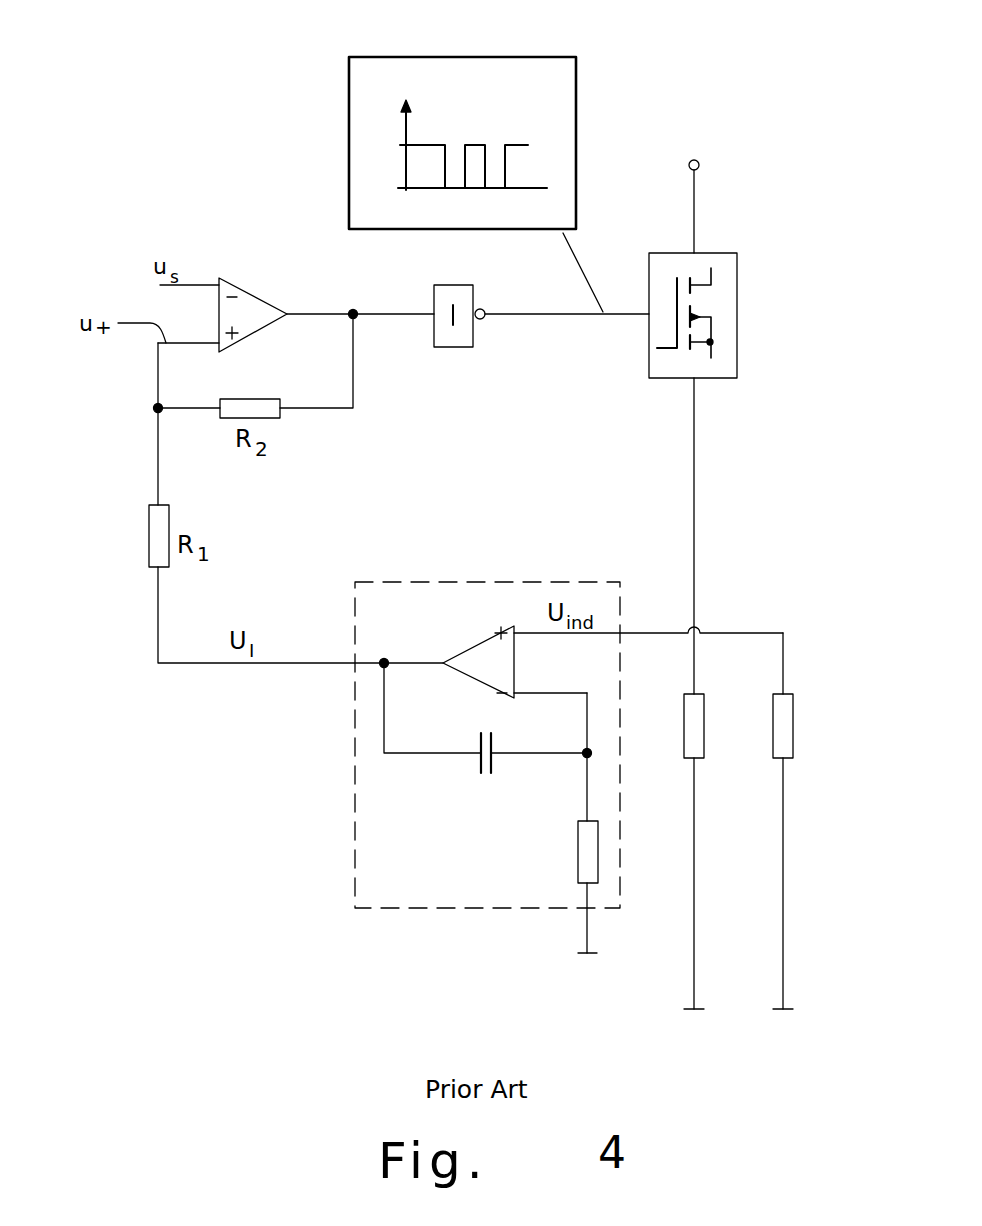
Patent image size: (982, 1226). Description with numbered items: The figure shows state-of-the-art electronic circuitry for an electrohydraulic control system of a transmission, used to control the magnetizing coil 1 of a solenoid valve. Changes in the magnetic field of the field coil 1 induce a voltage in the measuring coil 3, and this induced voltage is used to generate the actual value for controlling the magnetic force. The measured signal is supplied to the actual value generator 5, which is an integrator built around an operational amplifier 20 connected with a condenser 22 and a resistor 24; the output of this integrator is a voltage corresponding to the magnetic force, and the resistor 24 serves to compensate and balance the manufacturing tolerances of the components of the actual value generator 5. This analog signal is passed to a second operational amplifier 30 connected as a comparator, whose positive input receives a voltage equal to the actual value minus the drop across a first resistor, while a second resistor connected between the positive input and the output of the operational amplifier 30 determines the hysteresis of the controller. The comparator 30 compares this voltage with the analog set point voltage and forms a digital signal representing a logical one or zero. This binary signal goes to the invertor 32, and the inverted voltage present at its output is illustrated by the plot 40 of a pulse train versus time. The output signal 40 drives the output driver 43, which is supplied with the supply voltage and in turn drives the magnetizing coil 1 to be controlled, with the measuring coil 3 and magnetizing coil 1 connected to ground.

The magnetizing coil 1 is at (704, 748).
The measuring coil 3 is at (794, 728).
The actual value generator 5 is at (452, 908).
The operational amplifier 20 is at (483, 638).
The condenser 22 is at (478, 770).
The resistor 24 is at (578, 855).
The operational amplifier 30 is at (250, 300).
The invertor 32 is at (453, 347).
The plot 40 is at (481, 57).
The output driver 43 is at (737, 276).